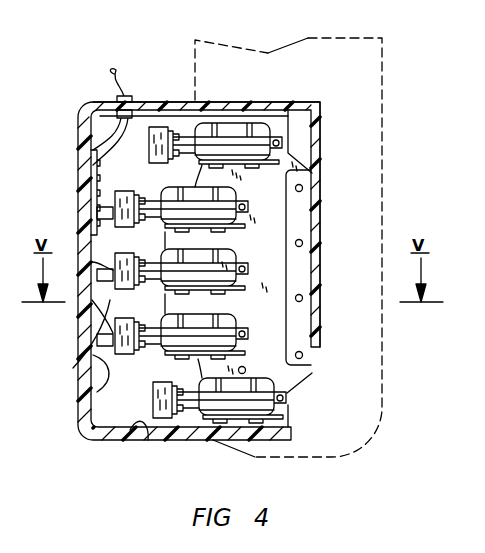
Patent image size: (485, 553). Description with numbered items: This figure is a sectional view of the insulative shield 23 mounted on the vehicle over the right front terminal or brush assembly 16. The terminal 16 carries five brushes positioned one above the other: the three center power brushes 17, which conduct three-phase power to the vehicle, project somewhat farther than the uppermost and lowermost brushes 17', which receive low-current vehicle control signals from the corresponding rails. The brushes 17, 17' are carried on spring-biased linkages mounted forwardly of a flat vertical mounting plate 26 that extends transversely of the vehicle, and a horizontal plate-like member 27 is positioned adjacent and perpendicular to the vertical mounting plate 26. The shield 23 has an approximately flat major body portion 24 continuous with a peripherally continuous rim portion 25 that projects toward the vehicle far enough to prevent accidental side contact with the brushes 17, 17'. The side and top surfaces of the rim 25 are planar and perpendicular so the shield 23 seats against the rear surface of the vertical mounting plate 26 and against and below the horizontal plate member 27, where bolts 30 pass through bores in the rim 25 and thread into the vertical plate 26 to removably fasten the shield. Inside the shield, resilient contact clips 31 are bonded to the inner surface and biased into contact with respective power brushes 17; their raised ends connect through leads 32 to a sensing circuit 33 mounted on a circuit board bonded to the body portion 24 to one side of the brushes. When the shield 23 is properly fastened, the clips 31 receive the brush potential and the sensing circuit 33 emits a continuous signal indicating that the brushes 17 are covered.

The terminal or brush assembly 16 is at (265, 230).
The brush 17 is at (170, 293).
The brush 17' is at (190, 248).
The insulative shield 23 is at (72, 131).
The major body portion 24 is at (97, 392).
The rim portion 25 is at (148, 440).
The vertical mounting plate 26 is at (296, 152).
The horizontal plate-like member 27 is at (284, 100).
The bolt 30 is at (245, 371).
The contact clip 31 is at (73, 362).
The lead 32 is at (88, 303).
The sensing circuit 33 is at (91, 175).